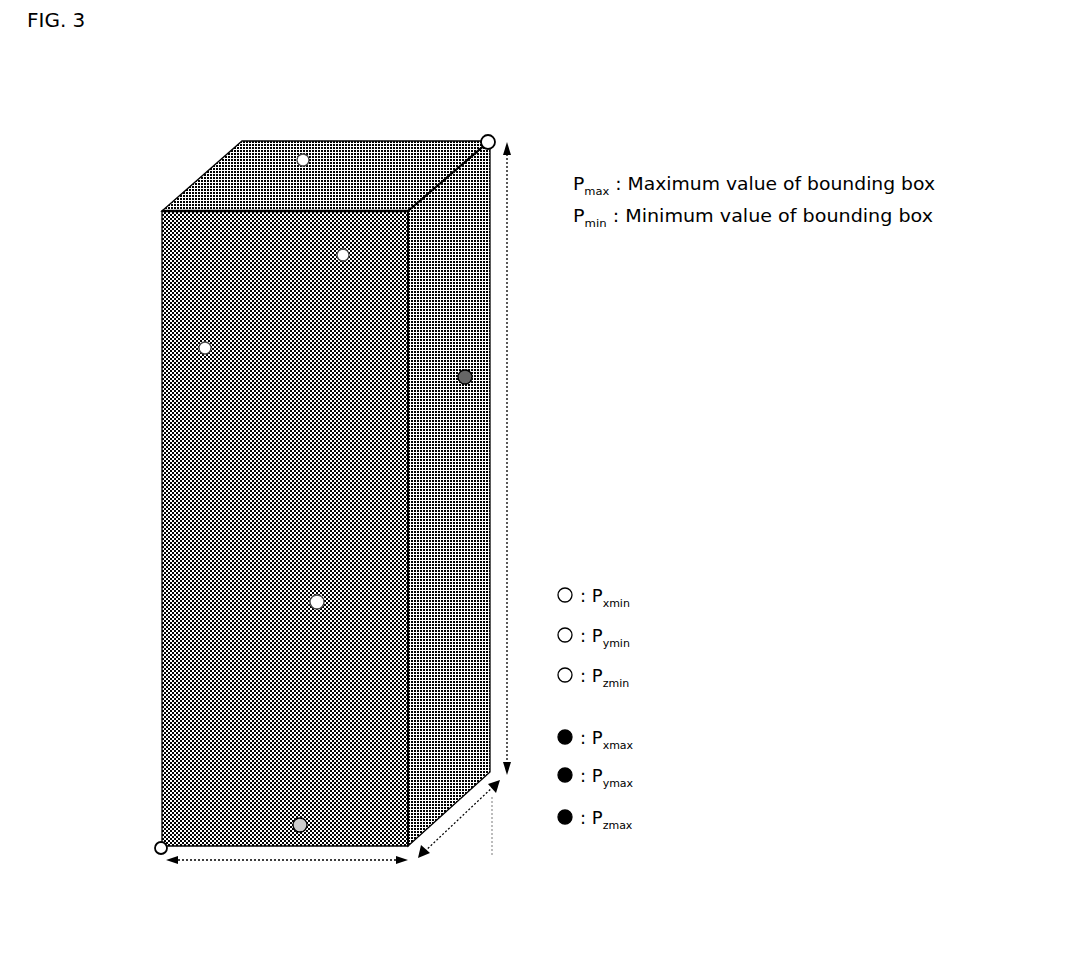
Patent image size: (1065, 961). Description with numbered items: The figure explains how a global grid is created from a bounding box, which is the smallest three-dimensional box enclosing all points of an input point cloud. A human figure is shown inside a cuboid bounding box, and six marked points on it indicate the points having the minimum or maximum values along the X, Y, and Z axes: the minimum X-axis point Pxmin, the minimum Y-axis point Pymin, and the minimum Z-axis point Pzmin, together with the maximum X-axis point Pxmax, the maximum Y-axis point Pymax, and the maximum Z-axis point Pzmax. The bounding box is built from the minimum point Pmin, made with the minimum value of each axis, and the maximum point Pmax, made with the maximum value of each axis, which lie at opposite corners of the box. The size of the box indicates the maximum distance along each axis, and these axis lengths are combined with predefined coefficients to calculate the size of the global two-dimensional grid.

The maximum point Pmax is at (493, 102).
The minimum point Pmin is at (134, 870).
The minimum X-axis point Pxmin is at (310, 603).
The minimum Y-axis point Pymin is at (199, 348).
The minimum Z-axis point Pzmin is at (303, 154).
The maximum X-axis point Pxmax is at (472, 376).
The maximum Y-axis point Pymax is at (349, 255).
The maximum Z-axis point Pzmax is at (300, 832).